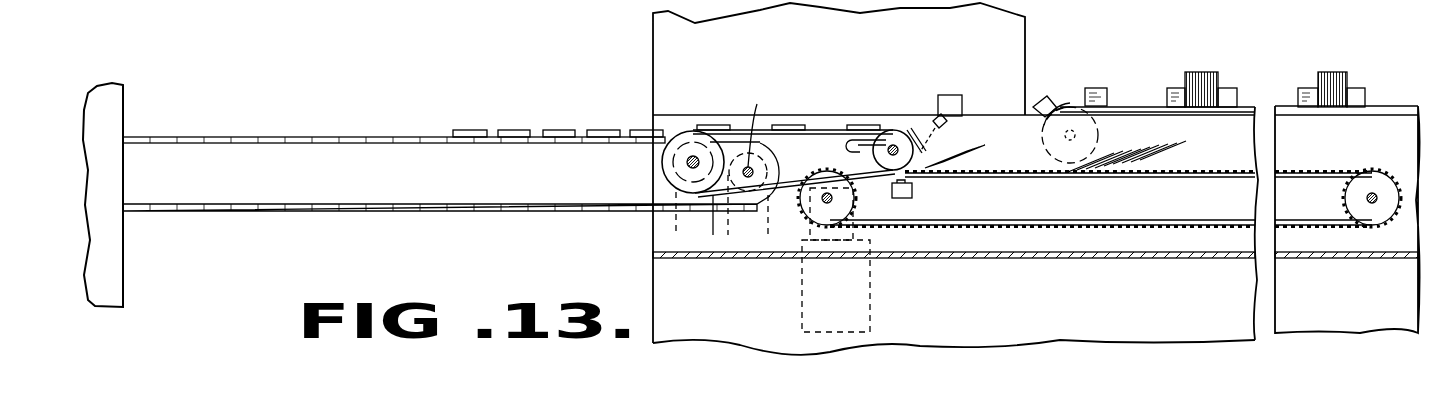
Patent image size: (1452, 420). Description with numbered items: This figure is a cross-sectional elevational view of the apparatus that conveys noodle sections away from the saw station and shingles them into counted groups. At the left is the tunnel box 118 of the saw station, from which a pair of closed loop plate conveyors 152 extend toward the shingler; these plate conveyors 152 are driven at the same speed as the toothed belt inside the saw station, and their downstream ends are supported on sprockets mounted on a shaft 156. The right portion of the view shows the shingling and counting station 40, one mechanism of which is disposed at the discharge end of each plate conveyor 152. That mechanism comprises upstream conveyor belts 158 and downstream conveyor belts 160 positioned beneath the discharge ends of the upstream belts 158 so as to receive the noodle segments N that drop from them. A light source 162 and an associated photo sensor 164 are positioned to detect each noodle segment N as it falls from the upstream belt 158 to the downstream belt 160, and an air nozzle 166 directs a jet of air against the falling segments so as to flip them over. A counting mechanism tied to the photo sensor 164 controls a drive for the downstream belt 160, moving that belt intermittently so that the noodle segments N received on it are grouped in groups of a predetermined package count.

The shingling and counting station 40 is at (1055, 62).
The tunnel box 118 is at (122, 111).
The closed loop plate conveyors 152 is at (313, 137).
The shaft 156 is at (762, 139).
The upstream conveyor belts 158 is at (815, 130).
The downstream conveyor belts 160 is at (1023, 177).
The light source 162 is at (962, 95).
The photo sensor 164 is at (912, 195).
The air nozzle 166 is at (848, 150).
The newspapers N is at (580, 132).